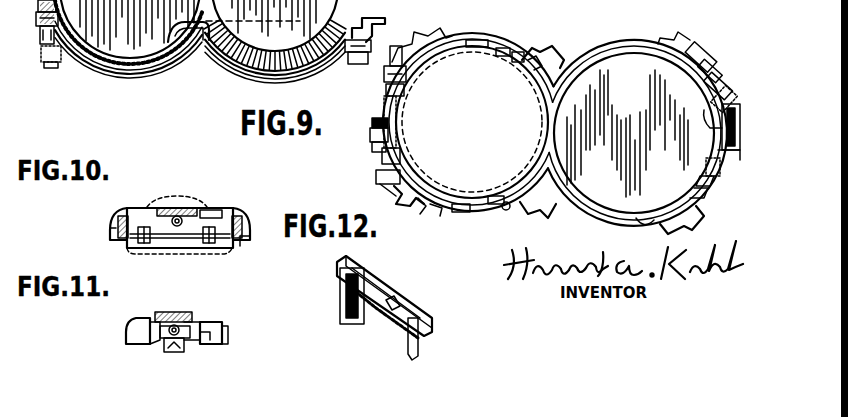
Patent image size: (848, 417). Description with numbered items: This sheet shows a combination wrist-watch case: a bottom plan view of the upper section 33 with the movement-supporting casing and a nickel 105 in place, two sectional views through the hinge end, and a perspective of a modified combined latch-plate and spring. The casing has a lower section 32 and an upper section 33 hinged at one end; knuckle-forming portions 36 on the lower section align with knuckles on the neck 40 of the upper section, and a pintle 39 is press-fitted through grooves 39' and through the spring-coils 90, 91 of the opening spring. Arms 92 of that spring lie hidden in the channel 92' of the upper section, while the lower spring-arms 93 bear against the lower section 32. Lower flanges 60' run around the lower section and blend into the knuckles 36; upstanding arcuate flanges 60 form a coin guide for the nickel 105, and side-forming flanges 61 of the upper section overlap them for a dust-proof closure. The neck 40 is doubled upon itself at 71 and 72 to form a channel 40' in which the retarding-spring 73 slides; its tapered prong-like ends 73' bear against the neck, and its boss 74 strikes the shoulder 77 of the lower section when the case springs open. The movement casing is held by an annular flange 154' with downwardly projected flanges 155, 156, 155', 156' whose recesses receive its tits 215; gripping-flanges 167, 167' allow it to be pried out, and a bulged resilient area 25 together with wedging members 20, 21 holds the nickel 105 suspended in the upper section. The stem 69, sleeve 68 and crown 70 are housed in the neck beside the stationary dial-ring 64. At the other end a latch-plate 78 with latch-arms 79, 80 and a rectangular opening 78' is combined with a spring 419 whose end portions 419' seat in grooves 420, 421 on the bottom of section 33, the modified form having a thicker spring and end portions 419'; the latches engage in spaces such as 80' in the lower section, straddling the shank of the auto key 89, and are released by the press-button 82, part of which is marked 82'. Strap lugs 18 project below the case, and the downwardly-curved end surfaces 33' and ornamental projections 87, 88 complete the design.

In FIG. 9, the auto key 89 is at (127, 45).
In FIG. 9, the lower spring-arms 93 is at (66, 62).
In FIG. 9, the lower flanges 60' is at (124, 67).
In FIG. 9, the lower section 32 is at (215, 68).
In FIG. 10, the lower section 32 is at (196, 249).
In FIG. 9, the upstanding arcuate flanges 60 is at (275, 71).
In FIG. 9, the spring-coil 91 is at (40, 20).
In FIG. 12, the spring-coil 91 is at (395, 56).
In FIG. 10, the spring-coil 91 is at (226, 248).
In FIG. 9, the knuckle-forming portions 36 is at (42, 32).
In FIG. 10, the knuckle-forming portions 36 is at (114, 218).
In FIG. 9, the strap lug 18 is at (44, 58).
In FIG. 9, the latch space 80' is at (353, 69).
In FIG. 12, the annular flange 154' is at (472, 122).
In FIG. 12, the pintle 39 is at (472, 100).
In FIG. 10, the pintle 39 is at (262, 248).
In FIG. 12, the pintle grooves 39' is at (448, 122).
In FIG. 12, the bulged resilient area 25 is at (585, 50).
In FIG. 12, the nickel 105 is at (614, 198).
In FIG. 12, the downwardly projected flange 155 is at (425, 34).
In FIG. 12, the gripping-flange 167 is at (501, 25).
In FIG. 12, the downwardly projected flange 156 is at (528, 32).
In FIG. 12, the tits 215 is at (520, 52).
In FIG. 12, the channel 92' is at (485, 138).
In FIG. 12, the ornamental projection 88 is at (556, 52).
In FIG. 12, the wedging member 20 is at (699, 52).
In FIG. 12, the latch spring 419 is at (713, 50).
In FIG. 12, the groove 420 is at (718, 80).
In FIG. 12, the latch-arm 79 is at (726, 94).
In FIG. 12, the press-button 82 is at (738, 121).
In FIG. 12, the temple end 82' is at (740, 152).
In FIG. 12, the latch-arm 80 is at (732, 172).
In FIG. 12, the groove 421 is at (710, 182).
In FIG. 12, the wedging member 21 is at (706, 194).
In FIG. 12, the downwardly-curved end surfaces 33' is at (703, 220).
In FIG. 10, the downwardly-curved end surfaces 33' is at (84, 228).
In FIG. 12, the side-forming flanges 61 is at (642, 224).
In FIG. 12, the ornamental projection 87 is at (536, 210).
In FIG. 12, the gripping-flange 167' is at (488, 221).
In FIG. 12, the downwardly projected flange 156' is at (494, 236).
In FIG. 12, the opening-spring arms 92 is at (458, 226).
In FIG. 12, the downwardly projected flange 155' is at (437, 237).
In FIG. 12, the spring-coil 90 is at (398, 196).
In FIG. 10, the spring-coil 90 is at (145, 246).
In FIG. 12, the channel 40' is at (387, 72).
In FIG. 11, the channel 40' is at (187, 313).
In FIG. 12, the neck 40 is at (377, 126).
In FIG. 11, the neck 40 is at (242, 335).
In FIG. 12, the sleeve 68 is at (372, 122).
In FIG. 10, the sleeve 68 is at (165, 206).
In FIG. 11, the sleeve 68 is at (170, 312).
In FIG. 12, the stem 69 is at (370, 134).
In FIG. 10, the stem 69 is at (222, 212).
In FIG. 11, the stem 69 is at (186, 340).
In FIG. 12, the crown 70 is at (372, 148).
In FIG. 10, the crown 70 is at (179, 216).
In FIG. 11, the crown 70 is at (180, 326).
In FIG. 12, the retarding-spring 73 is at (383, 183).
In FIG. 12, the projected end portions 419' is at (384, 308).
In FIG. 12, the rectangular opening 78' is at (418, 300).
In FIG. 12, the latch-plate 78 is at (387, 322).
In FIG. 10, the upper section 33 is at (176, 215).
In FIG. 10, the dial-ring 64 is at (198, 202).
In FIG. 10, the shoulder 77 is at (176, 248).
In FIG. 11, the prong-like ends 73' is at (233, 326).
In FIG. 11, the doubled neck portion 71 is at (142, 344).
In FIG. 11, the boss 74 is at (170, 352).
In FIG. 11, the doubled neck portion 72 is at (196, 340).